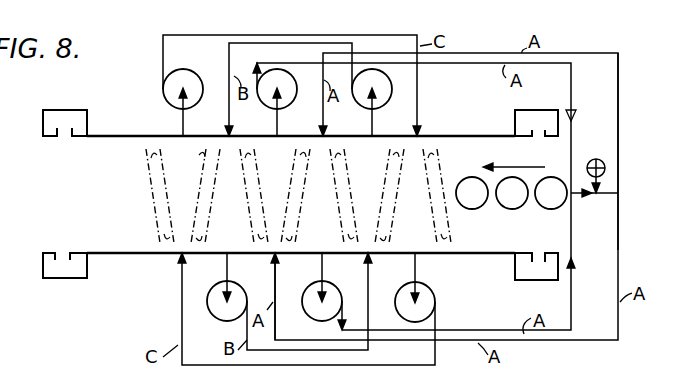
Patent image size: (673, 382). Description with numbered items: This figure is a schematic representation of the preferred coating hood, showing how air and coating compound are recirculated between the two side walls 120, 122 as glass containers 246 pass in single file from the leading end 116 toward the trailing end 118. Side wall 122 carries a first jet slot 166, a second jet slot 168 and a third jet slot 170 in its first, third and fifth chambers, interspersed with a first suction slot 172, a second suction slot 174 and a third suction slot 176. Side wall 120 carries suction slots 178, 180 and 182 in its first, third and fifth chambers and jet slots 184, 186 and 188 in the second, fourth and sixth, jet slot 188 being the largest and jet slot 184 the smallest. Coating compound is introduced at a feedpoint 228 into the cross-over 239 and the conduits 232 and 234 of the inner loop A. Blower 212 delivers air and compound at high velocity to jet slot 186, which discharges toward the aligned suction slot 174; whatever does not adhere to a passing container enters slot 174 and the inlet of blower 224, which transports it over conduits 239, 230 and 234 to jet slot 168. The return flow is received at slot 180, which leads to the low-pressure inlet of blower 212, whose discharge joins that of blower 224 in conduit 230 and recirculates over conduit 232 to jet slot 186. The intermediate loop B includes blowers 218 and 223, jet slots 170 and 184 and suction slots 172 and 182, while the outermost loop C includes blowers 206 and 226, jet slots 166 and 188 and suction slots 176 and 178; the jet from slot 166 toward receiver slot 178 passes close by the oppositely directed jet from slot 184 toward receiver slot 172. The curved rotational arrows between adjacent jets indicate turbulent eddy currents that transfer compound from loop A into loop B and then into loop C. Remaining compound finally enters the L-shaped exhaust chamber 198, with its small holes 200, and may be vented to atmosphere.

The leading end 116 is at (553, 155).
The trailing end 118 is at (108, 178).
The side wall 120 is at (108, 255).
The side wall 122 is at (115, 135).
The first jet slot 166 is at (445, 128).
The second jet slot 168 is at (340, 128).
The third jet slot 170 is at (247, 128).
The first suction slot 172 is at (392, 128).
The second suction slot 174 is at (300, 128).
The third suction slot 176 is at (202, 128).
The suction slot 178 is at (414, 258).
The suction slot 180 is at (320, 258).
The suction slot 182 is at (226, 258).
The jet slot 184 is at (366, 258).
The jet slot 186 is at (273, 258).
The jet slot 188 is at (175, 257).
The exhaust chamber 198 is at (74, 119).
The small holes 200 is at (62, 133).
The blower 206 is at (431, 292).
The blower 212 is at (312, 306).
The blower 218 is at (222, 311).
The blower 223 is at (389, 80).
The blower 224 is at (269, 72).
The blower 226 is at (200, 70).
The feedpoint 228 is at (604, 161).
The conduit 230 is at (609, 195).
The conduit 232 is at (620, 253).
The conduit 234 is at (618, 100).
The cross-over 239 is at (571, 100).
The glass containers 246 is at (540, 205).